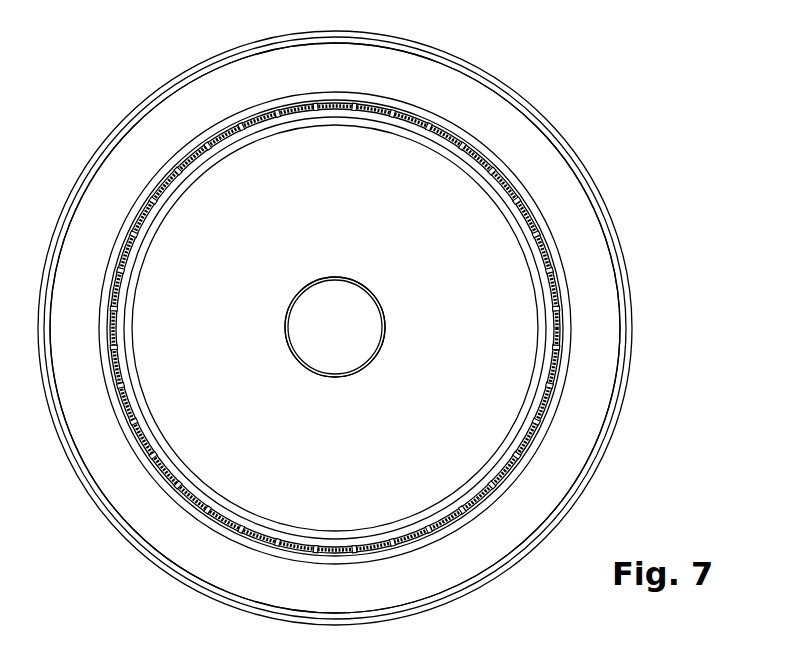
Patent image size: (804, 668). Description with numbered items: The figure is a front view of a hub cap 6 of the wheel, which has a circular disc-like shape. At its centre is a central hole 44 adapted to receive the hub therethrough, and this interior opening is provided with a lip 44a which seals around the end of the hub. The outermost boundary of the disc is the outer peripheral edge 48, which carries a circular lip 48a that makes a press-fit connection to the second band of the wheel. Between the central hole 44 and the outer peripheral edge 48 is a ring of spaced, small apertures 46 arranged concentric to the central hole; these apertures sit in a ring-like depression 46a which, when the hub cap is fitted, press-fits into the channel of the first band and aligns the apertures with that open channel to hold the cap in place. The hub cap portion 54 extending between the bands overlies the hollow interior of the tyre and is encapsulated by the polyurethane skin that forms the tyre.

The hub cap 6 is at (662, 159).
The central hole 44 is at (373, 337).
The lip 44a is at (305, 293).
The ring of spaced small apertures 46 is at (555, 383).
The depression 46a is at (557, 282).
The outer peripheral edge 48 is at (558, 130).
The circular lip 48a is at (152, 127).
The hub cap portion 54 is at (116, 185).